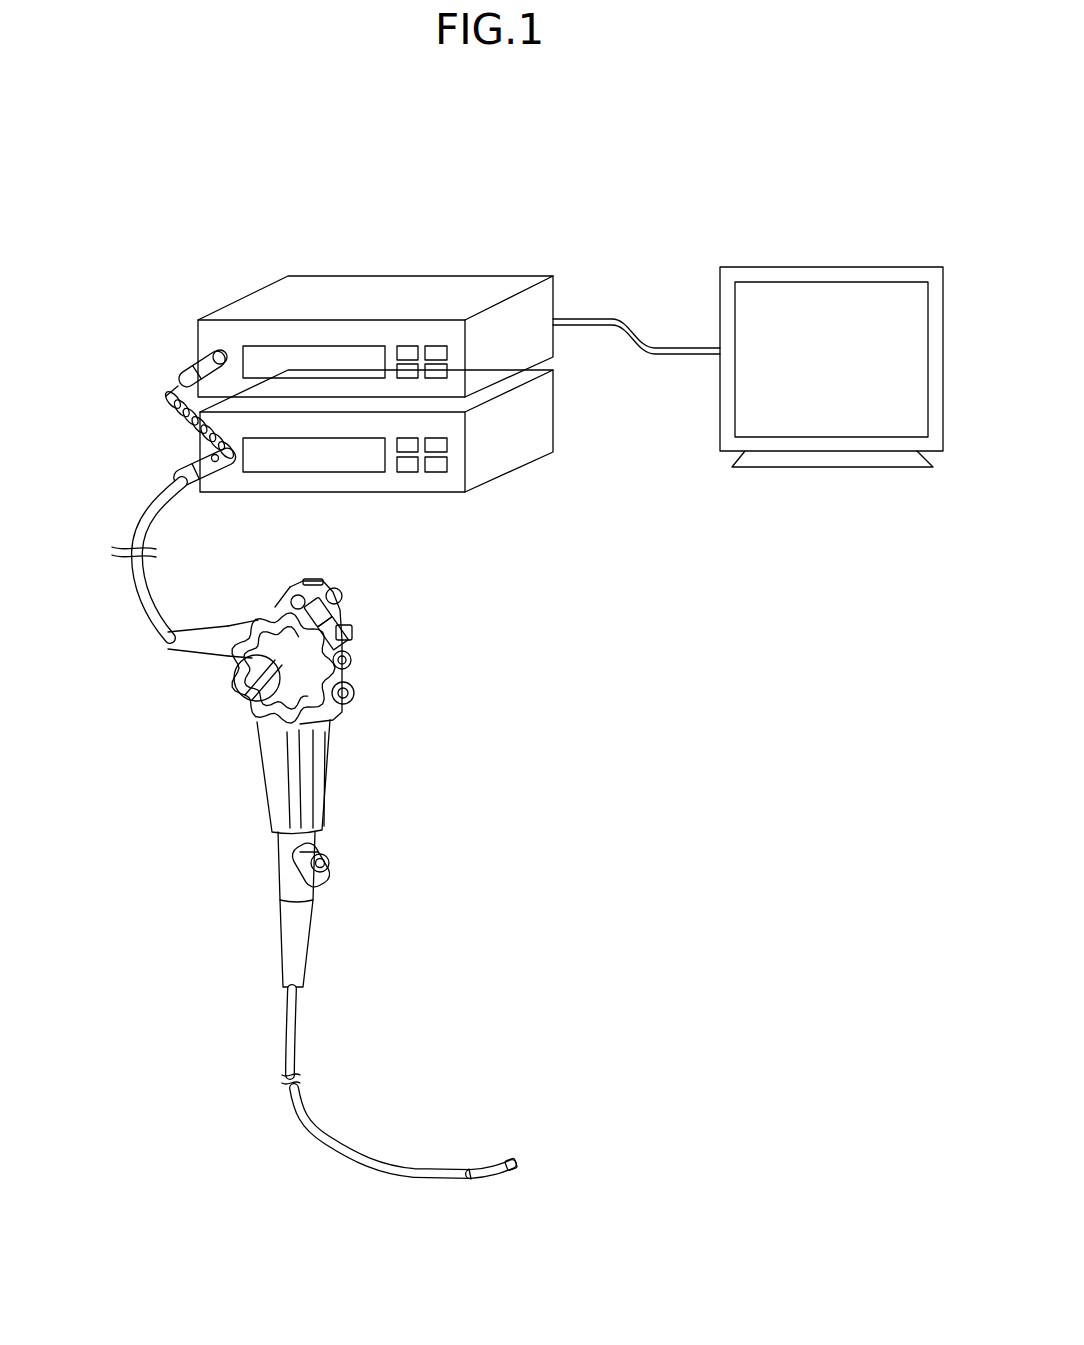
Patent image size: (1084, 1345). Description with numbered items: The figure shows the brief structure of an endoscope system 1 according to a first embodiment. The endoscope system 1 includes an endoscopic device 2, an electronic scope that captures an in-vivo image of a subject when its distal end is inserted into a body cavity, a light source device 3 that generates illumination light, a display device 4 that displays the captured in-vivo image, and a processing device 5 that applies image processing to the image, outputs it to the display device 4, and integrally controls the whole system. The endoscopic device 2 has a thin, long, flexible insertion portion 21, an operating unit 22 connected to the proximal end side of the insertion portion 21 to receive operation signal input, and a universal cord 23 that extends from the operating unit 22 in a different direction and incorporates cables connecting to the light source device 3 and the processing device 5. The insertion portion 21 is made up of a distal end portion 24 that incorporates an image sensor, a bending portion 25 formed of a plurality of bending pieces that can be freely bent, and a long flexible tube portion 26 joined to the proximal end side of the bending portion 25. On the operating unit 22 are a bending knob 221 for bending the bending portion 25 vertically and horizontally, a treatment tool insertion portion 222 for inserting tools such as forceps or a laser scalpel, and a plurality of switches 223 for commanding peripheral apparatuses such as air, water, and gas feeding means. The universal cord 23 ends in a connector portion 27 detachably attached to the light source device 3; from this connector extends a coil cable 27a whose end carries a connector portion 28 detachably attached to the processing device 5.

The endoscope system 1 is at (880, 182).
The endoscopic device 2 is at (412, 598).
The light source device 3 is at (545, 413).
The display device 4 is at (835, 272).
The processing device 5 is at (528, 280).
The insertion portion 21 is at (399, 1118).
The operating unit 22 is at (294, 580).
The universal cord 23 is at (128, 588).
The distal end portion 24 is at (513, 1176).
The bending portion 25 is at (490, 1163).
The flexible tube portion 26 is at (345, 1160).
The connector portion 27 is at (200, 465).
The coil cable 27a is at (165, 418).
The connector portion 28 is at (213, 357).
The bending knob 221 is at (234, 700).
The treatment tool insertion portion 222 is at (330, 862).
The switches 223 is at (330, 588).